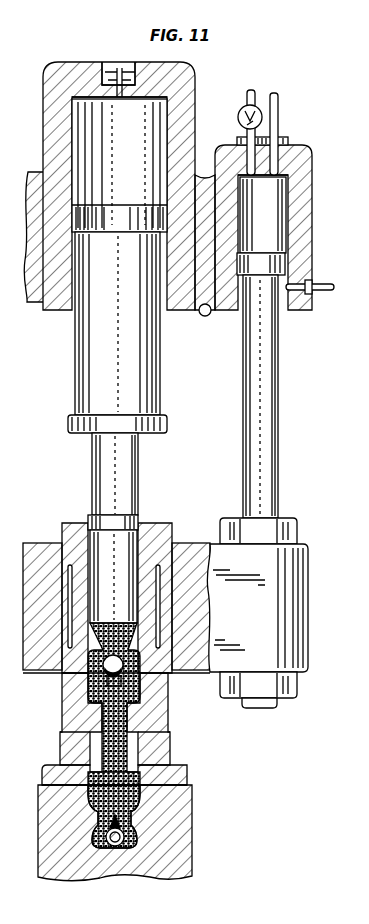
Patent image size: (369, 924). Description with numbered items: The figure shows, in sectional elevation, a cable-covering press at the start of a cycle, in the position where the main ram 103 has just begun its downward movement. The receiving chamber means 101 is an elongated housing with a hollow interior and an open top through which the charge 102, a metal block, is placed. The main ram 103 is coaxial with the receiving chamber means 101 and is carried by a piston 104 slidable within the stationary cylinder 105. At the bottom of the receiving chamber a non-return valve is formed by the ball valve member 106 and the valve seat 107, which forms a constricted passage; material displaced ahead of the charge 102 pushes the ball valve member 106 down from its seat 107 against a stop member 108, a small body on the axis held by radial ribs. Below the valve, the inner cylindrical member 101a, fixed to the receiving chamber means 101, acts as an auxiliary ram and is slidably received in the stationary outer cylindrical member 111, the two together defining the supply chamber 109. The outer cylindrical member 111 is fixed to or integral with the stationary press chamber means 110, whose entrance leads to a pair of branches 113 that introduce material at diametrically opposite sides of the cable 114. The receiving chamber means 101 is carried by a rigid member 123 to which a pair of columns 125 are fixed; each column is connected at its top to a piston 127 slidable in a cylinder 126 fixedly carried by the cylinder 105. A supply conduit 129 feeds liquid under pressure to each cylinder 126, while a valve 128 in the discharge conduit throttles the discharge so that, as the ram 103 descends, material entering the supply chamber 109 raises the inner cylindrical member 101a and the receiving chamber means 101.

The receiving chamber means 101 is at (157, 523).
The inner cylindrical member 101a is at (130, 748).
The charge 102 is at (102, 545).
The main ram 103 is at (102, 473).
The piston 104 is at (88, 358).
The stationary cylinder 105 is at (183, 86).
The ball valve member 106 is at (67, 683).
The valve seat 107 is at (103, 648).
The stop member 108 is at (122, 681).
The supply chamber 109 is at (135, 777).
The press chamber means 110 is at (52, 815).
The outer cylindrical member 111 is at (43, 768).
The branches 113 is at (118, 822).
The cable 114 is at (113, 846).
The rigid member 123 is at (278, 588).
The columns 125 is at (263, 366).
The cylinders 126 is at (302, 178).
The pistons 127 is at (280, 264).
The valve 128 is at (238, 115).
The supply conduit 129 is at (279, 107).